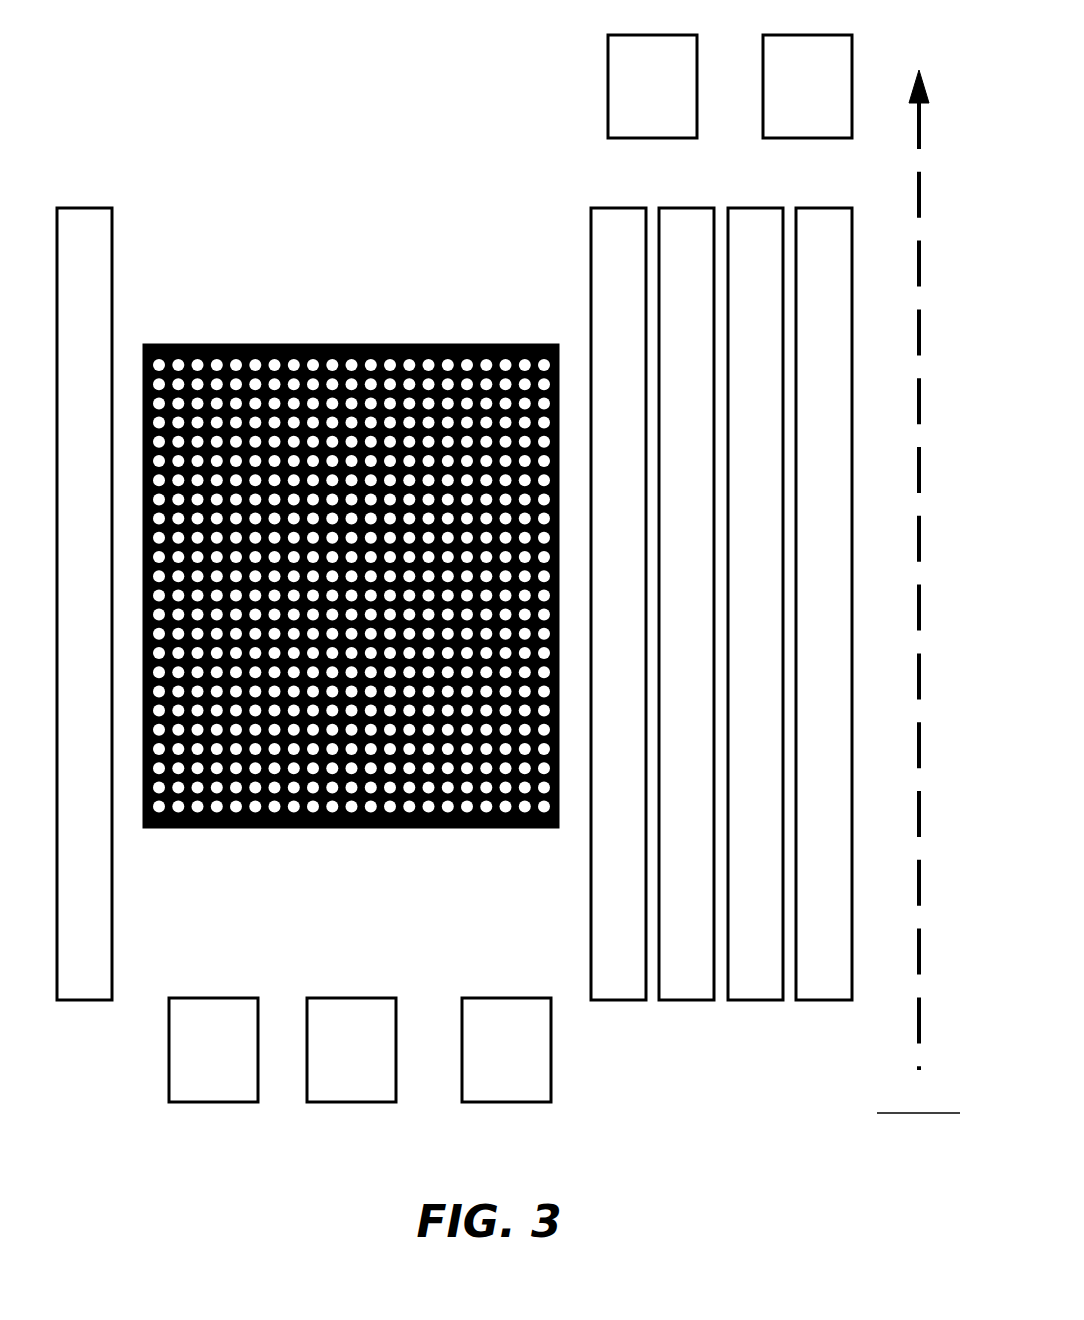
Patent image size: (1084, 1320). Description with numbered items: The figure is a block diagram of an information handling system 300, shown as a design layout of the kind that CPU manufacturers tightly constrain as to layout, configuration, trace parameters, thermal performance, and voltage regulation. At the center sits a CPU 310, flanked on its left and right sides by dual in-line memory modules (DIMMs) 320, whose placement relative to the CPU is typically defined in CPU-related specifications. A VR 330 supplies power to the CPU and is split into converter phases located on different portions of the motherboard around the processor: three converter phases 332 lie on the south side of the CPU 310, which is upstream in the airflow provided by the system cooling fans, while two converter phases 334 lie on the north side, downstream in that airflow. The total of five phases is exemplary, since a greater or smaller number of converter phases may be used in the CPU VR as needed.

The information handling system 300 is at (78, 1213).
The CPU 310 is at (158, 347).
The dual in-line memory modules (DIMMs) 320 is at (447, 585).
The VR 330 is at (578, 596).
The converter phase 332 is at (353, 1031).
The converter phase 334 is at (722, 69).